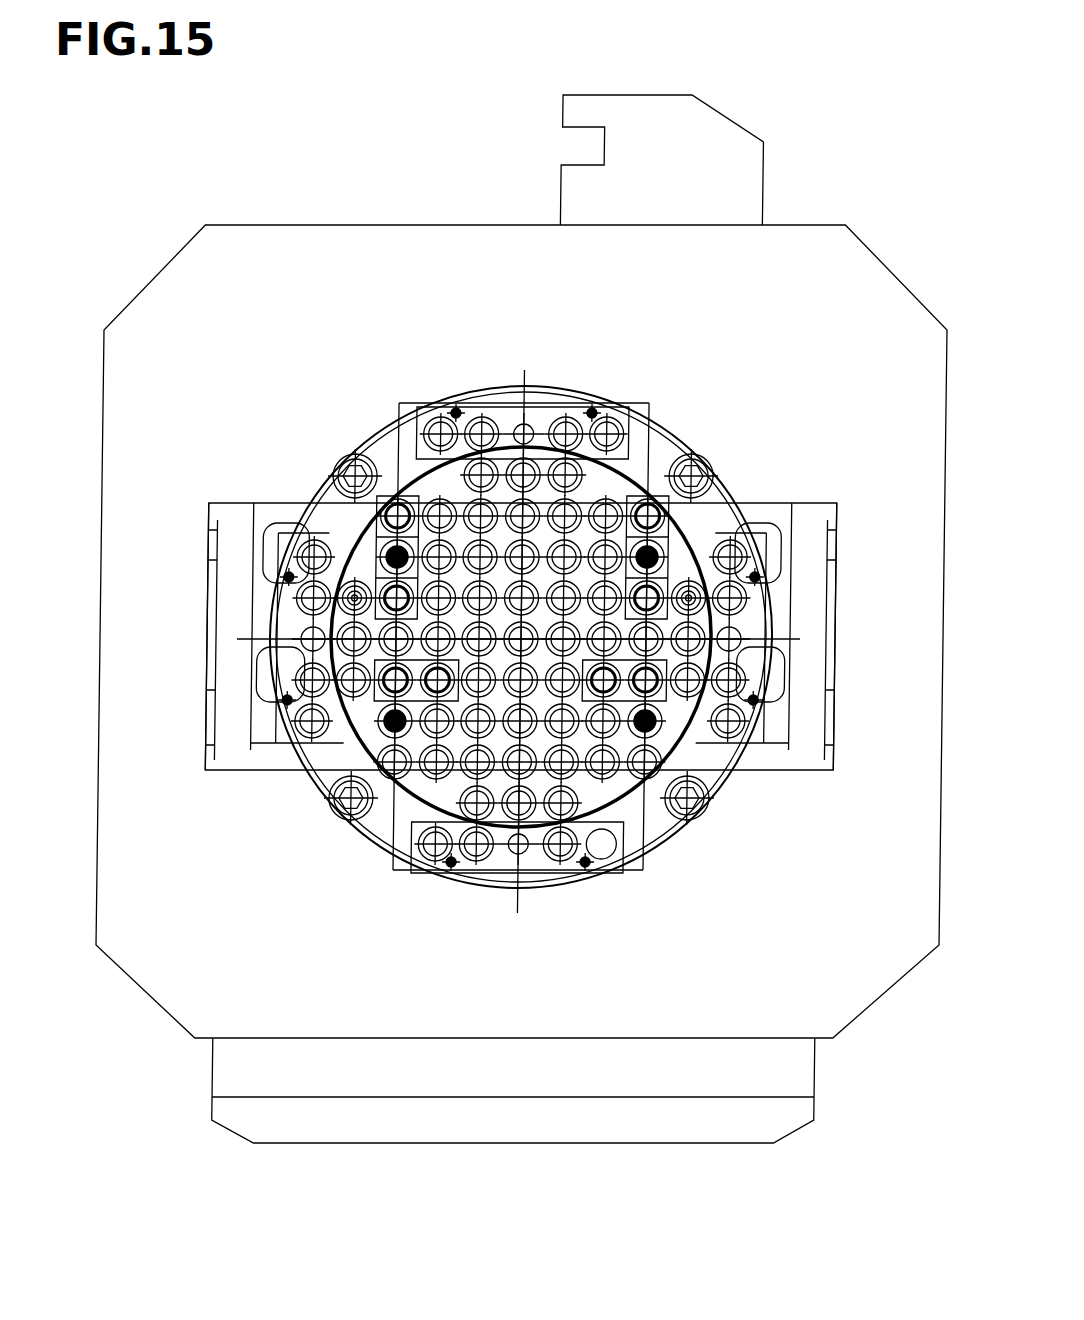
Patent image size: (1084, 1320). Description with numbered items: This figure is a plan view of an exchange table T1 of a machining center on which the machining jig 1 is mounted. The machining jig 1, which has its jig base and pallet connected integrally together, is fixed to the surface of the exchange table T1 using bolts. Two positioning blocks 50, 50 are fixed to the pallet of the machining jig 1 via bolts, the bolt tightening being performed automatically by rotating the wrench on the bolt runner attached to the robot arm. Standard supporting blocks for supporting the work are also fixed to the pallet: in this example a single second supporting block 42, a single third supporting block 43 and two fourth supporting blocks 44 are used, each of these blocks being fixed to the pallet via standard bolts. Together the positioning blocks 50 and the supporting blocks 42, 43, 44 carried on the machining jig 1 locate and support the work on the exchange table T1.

The machining jig 1 is at (696, 376).
The exchange table T1 is at (833, 1012).
The fourth supporting block 44 is at (345, 508).
The positioning block 50 is at (298, 596).
The third supporting block 43 is at (350, 745).
The second supporting block 42 is at (690, 735).